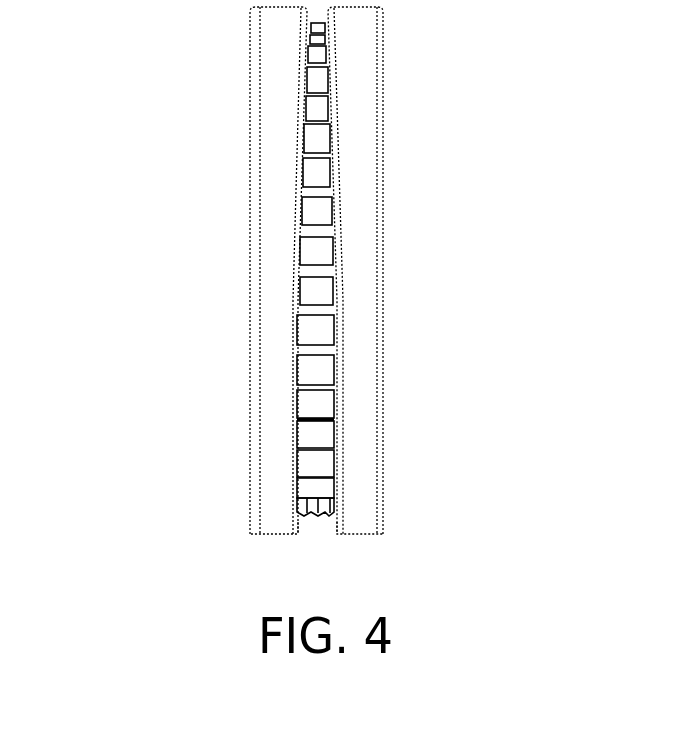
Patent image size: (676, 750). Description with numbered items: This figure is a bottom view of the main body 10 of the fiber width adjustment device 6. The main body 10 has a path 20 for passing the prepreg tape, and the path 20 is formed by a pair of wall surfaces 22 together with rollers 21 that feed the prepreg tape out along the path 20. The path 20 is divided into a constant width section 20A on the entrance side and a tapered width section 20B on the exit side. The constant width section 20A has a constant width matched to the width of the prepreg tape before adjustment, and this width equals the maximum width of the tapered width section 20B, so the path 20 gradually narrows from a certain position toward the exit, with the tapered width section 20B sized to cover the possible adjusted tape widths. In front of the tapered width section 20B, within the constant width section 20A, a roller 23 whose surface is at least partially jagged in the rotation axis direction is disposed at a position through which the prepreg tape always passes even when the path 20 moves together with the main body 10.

The fiber width adjustment device 6 is at (103, 115).
The main body 10 is at (249, 112).
The path 20 is at (115, 336).
The constant width section 20A is at (312, 438).
The tapered width section 20B is at (312, 352).
The roller 21 is at (313, 293).
The wall surface 22 is at (295, 527).
The roller having jagged surface 23 is at (298, 503).